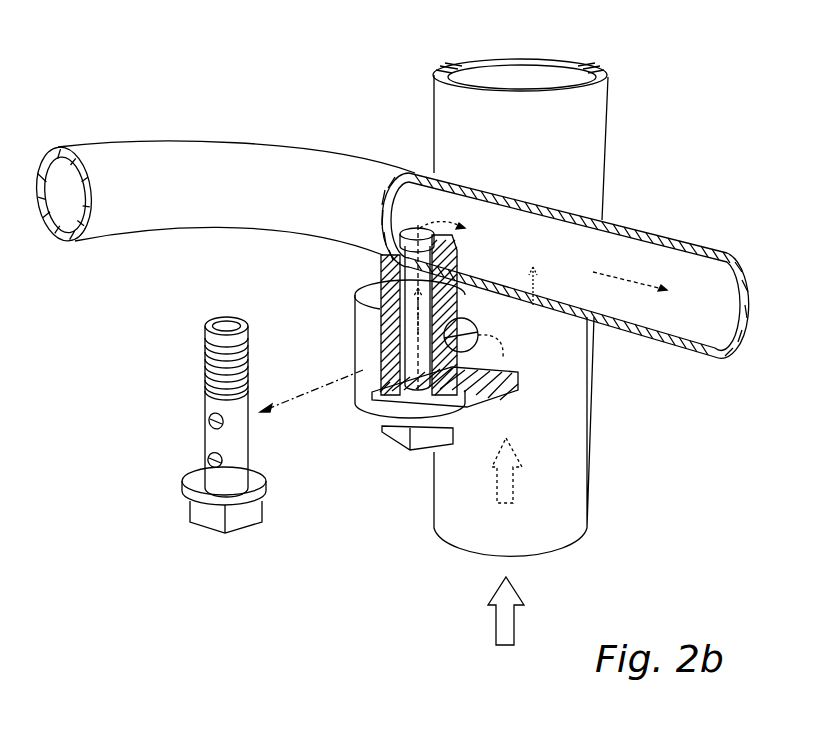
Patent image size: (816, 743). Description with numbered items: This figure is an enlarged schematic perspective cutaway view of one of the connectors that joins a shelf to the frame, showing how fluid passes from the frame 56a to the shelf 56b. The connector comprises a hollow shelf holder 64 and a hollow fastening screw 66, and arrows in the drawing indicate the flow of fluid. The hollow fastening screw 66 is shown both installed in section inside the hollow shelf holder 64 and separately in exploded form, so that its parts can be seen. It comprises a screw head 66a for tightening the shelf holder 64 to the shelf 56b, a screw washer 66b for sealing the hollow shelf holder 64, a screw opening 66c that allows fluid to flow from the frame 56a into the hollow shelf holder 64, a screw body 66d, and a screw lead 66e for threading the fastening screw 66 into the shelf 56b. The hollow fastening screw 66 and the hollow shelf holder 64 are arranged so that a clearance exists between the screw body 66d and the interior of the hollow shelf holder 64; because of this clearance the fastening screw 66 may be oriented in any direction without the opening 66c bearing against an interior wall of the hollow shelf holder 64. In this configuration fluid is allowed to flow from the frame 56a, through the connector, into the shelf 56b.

The frame 56a is at (587, 152).
The shelf 56b is at (253, 165).
The hollow shelf holder 64 is at (367, 408).
The hollow fastening screw 66 is at (176, 450).
The screw head 66a is at (190, 518).
The screw washer 66b is at (190, 473).
The screw opening 66c is at (207, 460).
The screw body 66d is at (203, 428).
The screw lead 66e is at (205, 355).